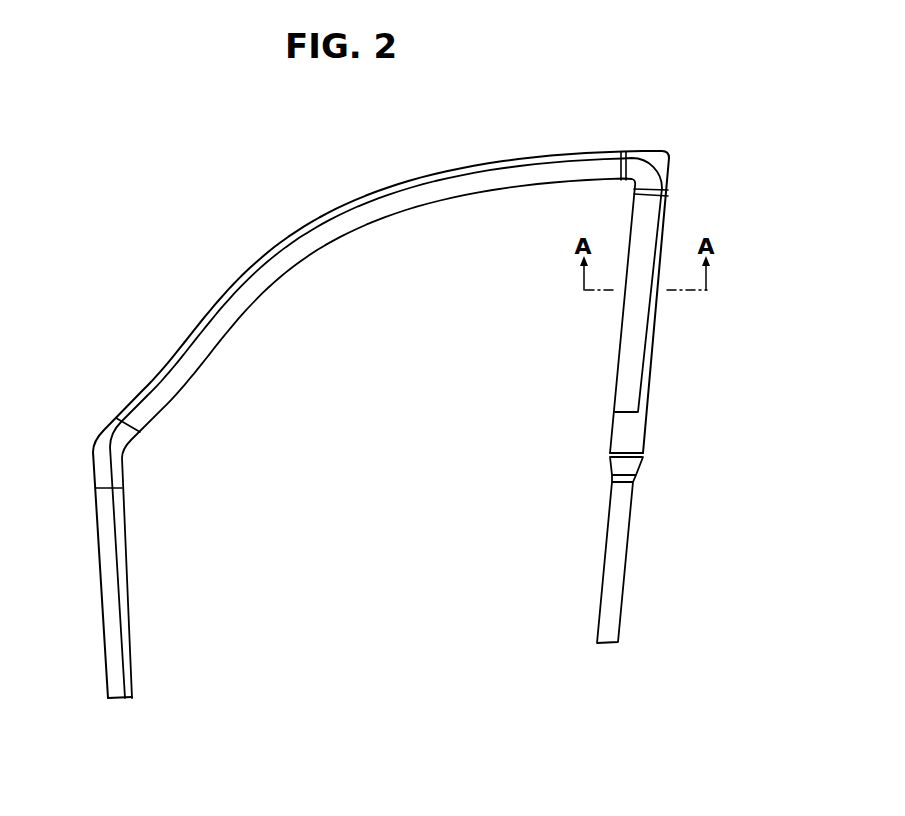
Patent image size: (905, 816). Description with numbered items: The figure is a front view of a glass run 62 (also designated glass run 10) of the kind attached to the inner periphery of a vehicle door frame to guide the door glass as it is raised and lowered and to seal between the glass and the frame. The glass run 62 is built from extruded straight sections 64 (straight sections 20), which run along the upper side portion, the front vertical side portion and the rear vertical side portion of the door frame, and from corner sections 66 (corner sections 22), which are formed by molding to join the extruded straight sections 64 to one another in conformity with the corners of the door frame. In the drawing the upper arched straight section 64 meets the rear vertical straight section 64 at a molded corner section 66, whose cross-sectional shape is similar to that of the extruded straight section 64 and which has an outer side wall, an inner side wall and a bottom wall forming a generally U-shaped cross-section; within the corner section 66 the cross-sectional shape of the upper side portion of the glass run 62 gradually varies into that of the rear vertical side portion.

The glass run 62 is at (456, 406).
The glass run 10 is at (302, 199).
The straight sections 64 is at (454, 428).
The straight sections 20 is at (362, 218).
The corner sections 66 is at (458, 306).
The corner sections 22 is at (670, 170).